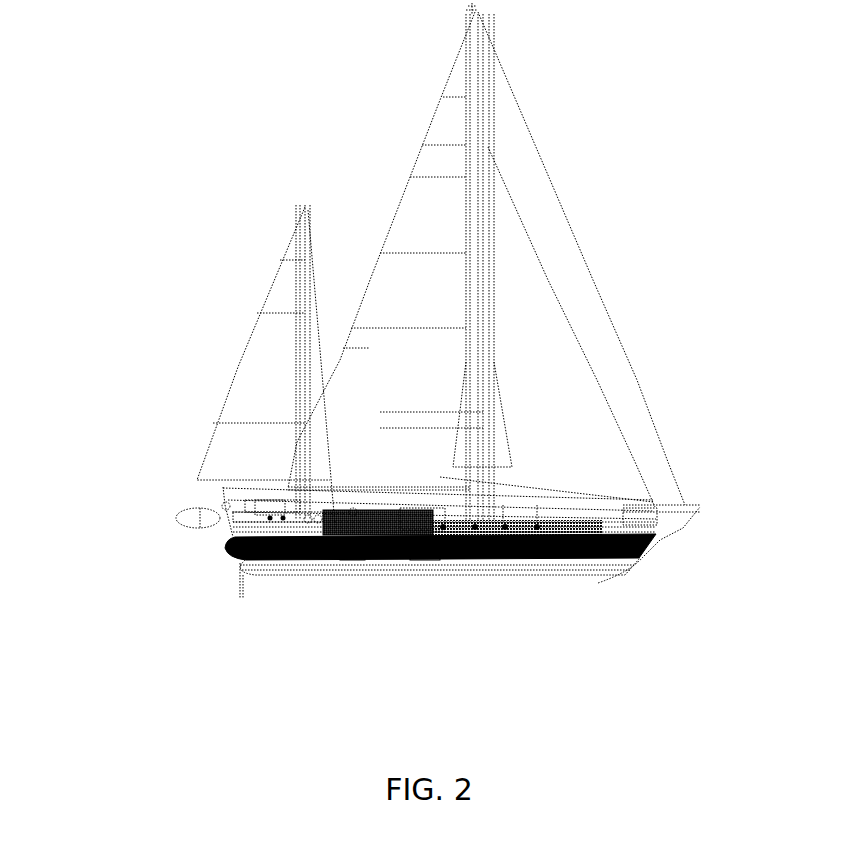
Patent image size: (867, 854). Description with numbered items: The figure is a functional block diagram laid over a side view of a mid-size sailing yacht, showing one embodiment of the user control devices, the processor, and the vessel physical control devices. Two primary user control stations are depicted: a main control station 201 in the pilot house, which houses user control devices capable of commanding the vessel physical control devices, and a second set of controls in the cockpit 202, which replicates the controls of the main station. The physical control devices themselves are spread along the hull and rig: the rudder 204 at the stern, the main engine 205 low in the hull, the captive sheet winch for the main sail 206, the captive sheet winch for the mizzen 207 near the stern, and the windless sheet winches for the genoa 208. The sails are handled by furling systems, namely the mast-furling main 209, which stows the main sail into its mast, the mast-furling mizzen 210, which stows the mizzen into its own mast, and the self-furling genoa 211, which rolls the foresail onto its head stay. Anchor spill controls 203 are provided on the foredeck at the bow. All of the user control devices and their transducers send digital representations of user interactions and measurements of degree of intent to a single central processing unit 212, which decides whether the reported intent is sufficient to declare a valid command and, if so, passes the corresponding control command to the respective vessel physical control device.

The main control station 201 is at (427, 517).
The cockpit 202 is at (268, 507).
The anchor spill controls 203 is at (653, 540).
The rudder 204 is at (240, 585).
The main engine 205 is at (352, 583).
The main sail sheet winch 206 is at (353, 508).
The mizzen sheet winch 207 is at (220, 503).
The genoa sheet winches 208 is at (308, 515).
The main sail furling system 209 is at (478, 235).
The mizzen furling system 210 is at (300, 322).
The genoa furling system 211 is at (585, 253).
The central processing unit 212 is at (423, 582).